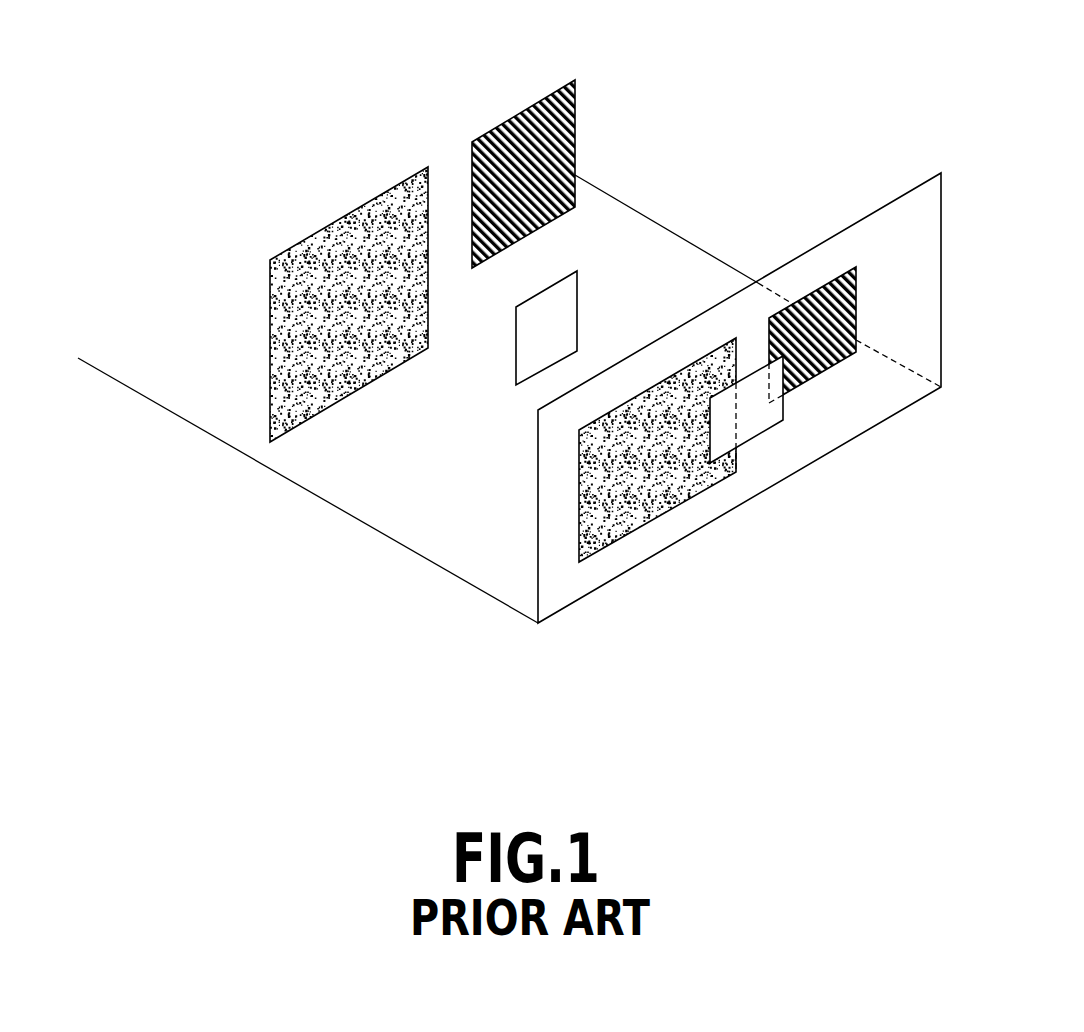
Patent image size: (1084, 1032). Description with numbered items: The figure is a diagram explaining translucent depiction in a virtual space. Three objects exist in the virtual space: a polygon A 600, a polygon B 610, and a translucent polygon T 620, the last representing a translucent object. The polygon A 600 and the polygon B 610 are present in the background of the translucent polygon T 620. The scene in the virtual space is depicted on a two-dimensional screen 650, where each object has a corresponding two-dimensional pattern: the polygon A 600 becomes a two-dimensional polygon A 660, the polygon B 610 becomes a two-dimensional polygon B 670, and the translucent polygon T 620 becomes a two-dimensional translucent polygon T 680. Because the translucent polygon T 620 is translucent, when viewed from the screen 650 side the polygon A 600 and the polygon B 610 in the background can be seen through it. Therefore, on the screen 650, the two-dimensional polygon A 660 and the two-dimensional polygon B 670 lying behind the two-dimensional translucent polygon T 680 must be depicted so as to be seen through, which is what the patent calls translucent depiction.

The polygon A 600 is at (339, 226).
The polygon B 610 is at (513, 147).
The translucent polygon T 620 is at (568, 305).
The two-dimensional screen 650 is at (715, 512).
The polygon A (two-dimensional) 660 is at (615, 517).
The polygon B (two-dimensional) 670 is at (822, 368).
The translucent polygon T (two-dimensional) 680 is at (757, 425).